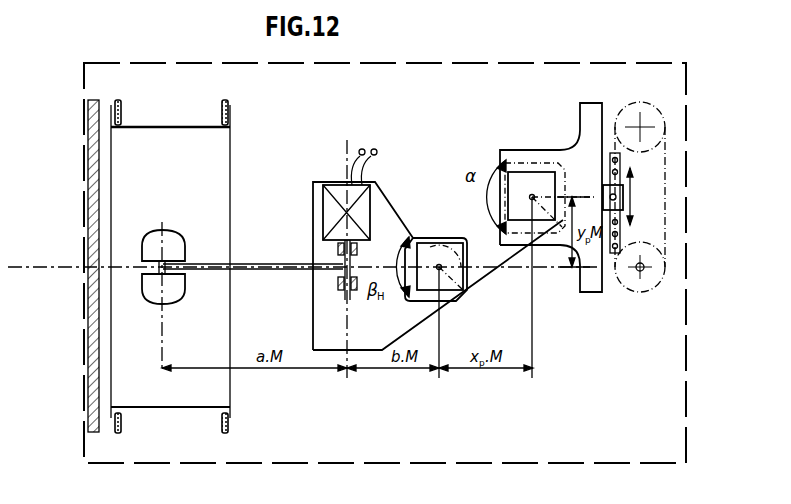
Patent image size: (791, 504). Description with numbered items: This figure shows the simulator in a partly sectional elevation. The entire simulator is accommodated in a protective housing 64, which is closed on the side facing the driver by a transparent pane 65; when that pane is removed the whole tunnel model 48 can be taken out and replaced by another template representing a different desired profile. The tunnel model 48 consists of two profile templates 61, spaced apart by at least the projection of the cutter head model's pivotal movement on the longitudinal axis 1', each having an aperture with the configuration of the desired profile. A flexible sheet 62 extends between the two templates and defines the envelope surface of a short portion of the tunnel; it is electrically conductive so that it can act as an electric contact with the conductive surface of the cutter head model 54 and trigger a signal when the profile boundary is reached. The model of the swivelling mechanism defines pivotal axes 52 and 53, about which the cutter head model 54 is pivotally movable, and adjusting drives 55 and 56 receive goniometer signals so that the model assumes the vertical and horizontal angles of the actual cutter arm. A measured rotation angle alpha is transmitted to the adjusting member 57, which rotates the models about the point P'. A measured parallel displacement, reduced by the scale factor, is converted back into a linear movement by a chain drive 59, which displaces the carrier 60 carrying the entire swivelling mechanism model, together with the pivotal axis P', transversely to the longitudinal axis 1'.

The longitudinal axis 1' is at (304, 245).
The tunnel model 48 is at (130, 352).
The pivotal axis 52 is at (344, 150).
The pivotal axis 53 is at (460, 292).
The cutter head model 54 is at (168, 240).
The adjusting drive 55 is at (333, 207).
The adjusting drive 56 is at (450, 242).
The adjusting member 57 is at (536, 172).
The chain drive 59 is at (666, 185).
The carrier 60 is at (592, 290).
The profile templates 61 is at (222, 108).
The flexible sheet 62 is at (160, 408).
The protective housing 64 is at (687, 380).
The transparent pane 65 is at (88, 167).